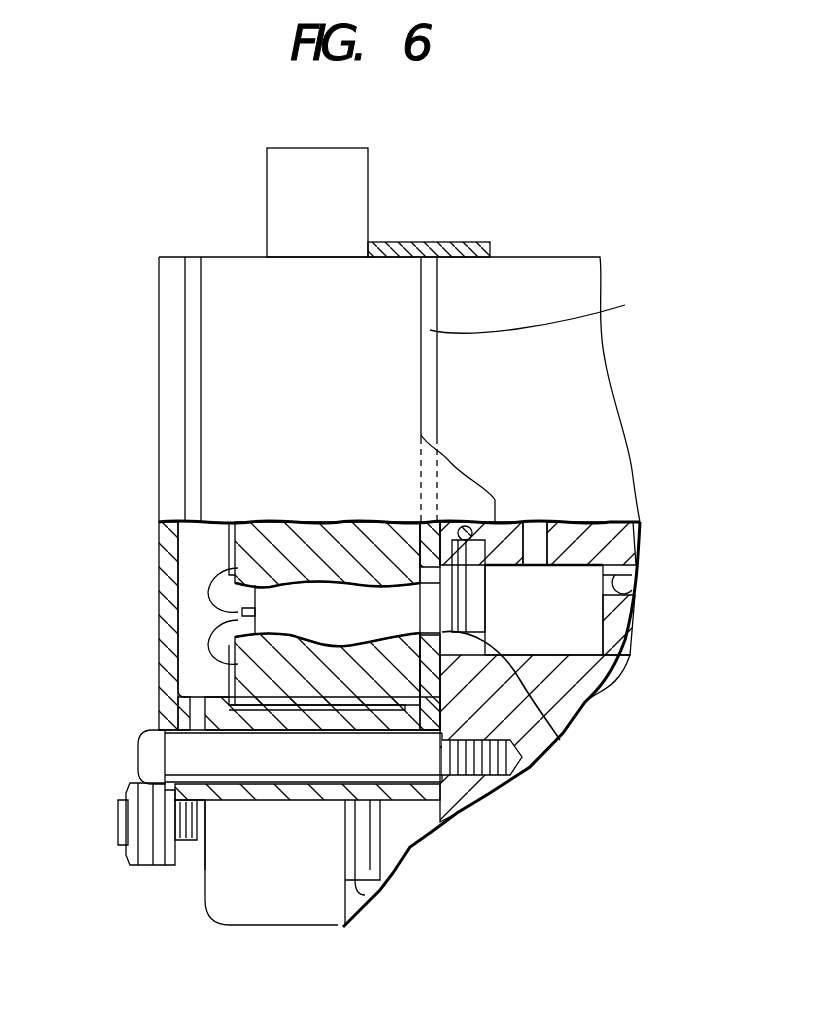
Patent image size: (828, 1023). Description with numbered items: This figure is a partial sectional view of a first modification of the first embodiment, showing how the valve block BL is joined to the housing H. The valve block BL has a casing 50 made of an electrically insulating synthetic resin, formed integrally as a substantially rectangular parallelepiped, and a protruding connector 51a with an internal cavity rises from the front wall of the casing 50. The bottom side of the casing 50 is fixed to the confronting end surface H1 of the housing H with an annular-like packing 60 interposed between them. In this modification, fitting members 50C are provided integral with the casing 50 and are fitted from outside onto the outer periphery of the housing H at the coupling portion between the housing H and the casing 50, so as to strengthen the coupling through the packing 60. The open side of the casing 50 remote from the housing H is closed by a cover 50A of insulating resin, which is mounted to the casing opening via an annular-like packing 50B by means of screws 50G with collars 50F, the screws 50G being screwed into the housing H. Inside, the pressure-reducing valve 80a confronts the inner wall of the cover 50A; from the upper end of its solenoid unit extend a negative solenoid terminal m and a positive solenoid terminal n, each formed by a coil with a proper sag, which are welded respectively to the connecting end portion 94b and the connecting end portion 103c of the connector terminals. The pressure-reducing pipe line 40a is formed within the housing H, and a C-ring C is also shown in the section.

The housing H is at (545, 272).
The valve block BL is at (243, 290).
The protruding connector 51a is at (362, 147).
The fitting member 50C is at (410, 245).
The confronting end surface H1 is at (435, 257).
The annular-like packing 60 is at (546, 313).
The annular-like packing 50B is at (190, 318).
The cover 50A is at (170, 603).
The connecting end portion 103c is at (225, 545).
The connecting end portion 94b is at (225, 683).
The pressure-reducing valve 80a is at (335, 600).
The negative solenoid terminal m is at (210, 592).
The positive solenoid terminal n is at (210, 638).
The pressure-reducing pipe line 40a is at (608, 600).
The C-ring C is at (452, 500).
The screw 50G is at (152, 775).
The collar 50F is at (215, 812).
The casing 50 is at (400, 720).